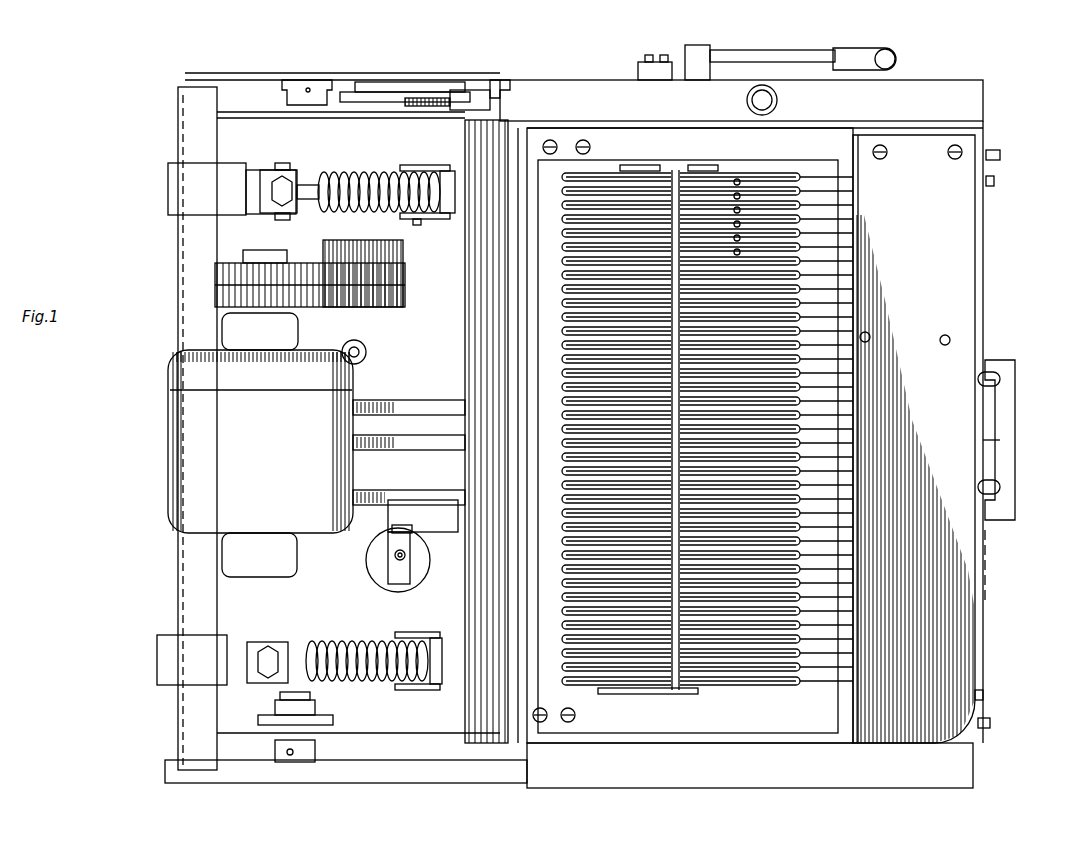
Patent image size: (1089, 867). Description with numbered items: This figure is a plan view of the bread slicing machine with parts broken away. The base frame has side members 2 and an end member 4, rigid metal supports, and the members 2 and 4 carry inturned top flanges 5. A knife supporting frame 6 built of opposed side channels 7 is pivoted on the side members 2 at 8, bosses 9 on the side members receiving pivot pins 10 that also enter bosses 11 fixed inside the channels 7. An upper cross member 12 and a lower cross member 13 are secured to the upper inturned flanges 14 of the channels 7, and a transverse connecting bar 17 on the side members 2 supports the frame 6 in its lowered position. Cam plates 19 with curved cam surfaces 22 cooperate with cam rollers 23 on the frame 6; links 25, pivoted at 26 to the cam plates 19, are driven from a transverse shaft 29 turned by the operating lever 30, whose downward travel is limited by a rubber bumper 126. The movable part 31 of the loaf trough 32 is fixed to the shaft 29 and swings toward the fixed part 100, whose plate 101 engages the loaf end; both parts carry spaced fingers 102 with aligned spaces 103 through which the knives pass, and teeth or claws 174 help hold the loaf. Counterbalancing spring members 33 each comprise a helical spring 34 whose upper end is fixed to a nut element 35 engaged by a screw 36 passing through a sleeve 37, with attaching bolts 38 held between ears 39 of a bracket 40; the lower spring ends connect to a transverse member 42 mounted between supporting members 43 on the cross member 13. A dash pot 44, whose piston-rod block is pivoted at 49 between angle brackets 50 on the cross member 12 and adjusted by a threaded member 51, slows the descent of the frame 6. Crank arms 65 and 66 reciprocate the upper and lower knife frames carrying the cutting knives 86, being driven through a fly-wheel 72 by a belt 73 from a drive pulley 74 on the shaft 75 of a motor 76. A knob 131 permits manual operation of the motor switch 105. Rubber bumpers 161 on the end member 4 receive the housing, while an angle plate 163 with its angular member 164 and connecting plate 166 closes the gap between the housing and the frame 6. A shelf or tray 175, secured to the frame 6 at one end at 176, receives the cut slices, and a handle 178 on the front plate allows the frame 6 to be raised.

The side members 2 is at (178, 624).
The end member 4 is at (178, 150).
The inturned top flanges 5 is at (178, 111).
The knife supporting frame 6 is at (838, 132).
The side channels 7 is at (855, 120).
The pivot mounting 8 is at (322, 726).
The bosses 9 is at (178, 483).
The pivot pins 10 is at (275, 736).
The bosses 11 is at (318, 708).
The upper cross member 12 is at (604, 158).
The lower cross member 13 is at (760, 784).
The upper inturned flanges 14 is at (835, 160).
The transverse connecting bar 17 is at (652, 128).
The cam plates 19 is at (355, 92).
The cam surface 22 is at (427, 98).
The cam rollers 23 is at (462, 90).
The links 25 is at (500, 88).
The pivot connection 26 is at (415, 92).
The transverse shaft 29 is at (696, 48).
The operating arm or lever 30 is at (730, 50).
The movable part of loaf receiving platform 31 is at (790, 178).
The loaf receiving platform or trough 32 is at (688, 164).
The spring members 33 is at (372, 172).
The helical spring 34 is at (372, 212).
The nut element 35 is at (320, 188).
The screw 36 is at (268, 192).
The sleeve 37 is at (305, 208).
The attaching bolts 38 is at (285, 222).
The ears 39 is at (265, 170).
The bracket 40 is at (180, 658).
The transverse support or member 42 is at (416, 225).
The supporting members 43 is at (452, 220).
The dash pot 44 is at (372, 577).
The pivot 49 is at (402, 525).
The angle brackets 50 is at (422, 505).
The adjusting member 51 is at (393, 555).
The crank arm 65 is at (392, 400).
The crank arm 66 is at (410, 440).
The fly-wheel or pulley 72 is at (405, 270).
The belt 73 is at (385, 307).
The pulley or drive wheel 74 is at (215, 295).
The shaft 75 is at (245, 256).
The motor 76 is at (185, 410).
The cutting knives 86 is at (858, 280).
The fixed part of loaf support 100 is at (615, 176).
The plate 101 is at (736, 178).
The fingers 102 is at (560, 445).
The spaces 103 is at (555, 495).
The switch 105 is at (800, 580).
The rubber bumper 126 is at (648, 60).
The knob 131 is at (777, 104).
The rubber bumpers 161 is at (1000, 440).
The pivotal angle plate 163 is at (590, 695).
The angularly shaped member 164 is at (550, 302).
The connecting plate member 166 is at (395, 351).
The teeth or claws 174 is at (735, 186).
The shelf or tray 175 is at (975, 537).
The securing point 176 is at (886, 154).
The handle 178 is at (1012, 410).